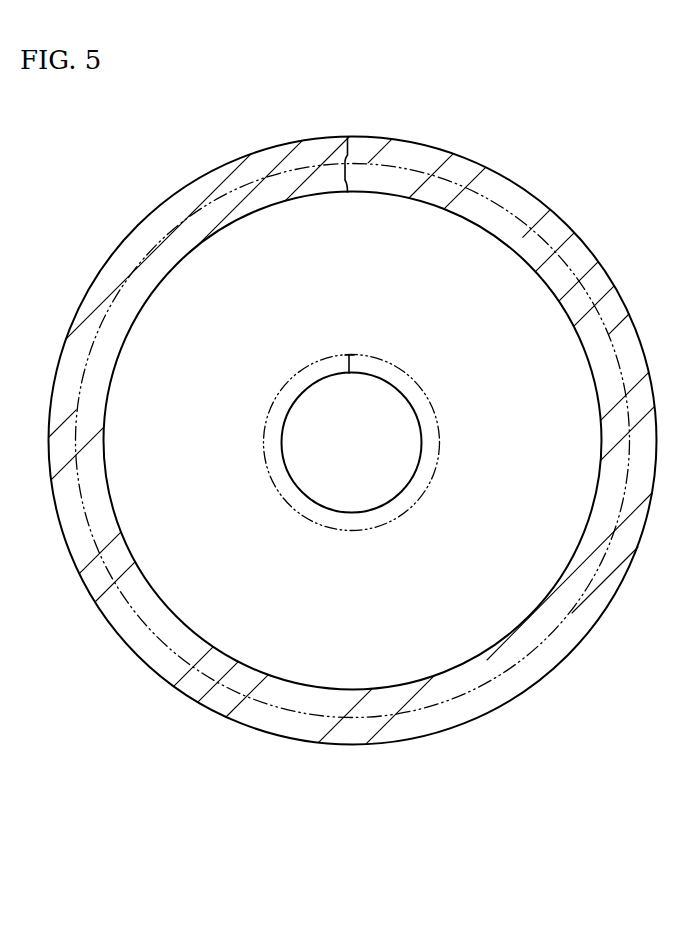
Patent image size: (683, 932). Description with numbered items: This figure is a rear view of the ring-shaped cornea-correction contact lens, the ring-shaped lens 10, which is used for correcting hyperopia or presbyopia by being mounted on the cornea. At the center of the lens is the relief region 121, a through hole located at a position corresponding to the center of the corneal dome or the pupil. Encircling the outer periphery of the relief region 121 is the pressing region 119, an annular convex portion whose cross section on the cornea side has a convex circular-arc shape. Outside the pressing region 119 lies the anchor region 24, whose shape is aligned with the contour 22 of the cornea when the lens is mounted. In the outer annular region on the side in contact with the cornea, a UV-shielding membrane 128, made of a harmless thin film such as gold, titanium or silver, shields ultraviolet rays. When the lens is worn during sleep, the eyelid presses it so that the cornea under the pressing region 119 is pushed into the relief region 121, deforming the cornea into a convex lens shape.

The ring-shaped lens 10 is at (504, 171).
The contour 22 is at (557, 211).
The anchor region 24 is at (510, 293).
The pressing region 119 is at (365, 356).
The relief region 121 is at (386, 458).
The UV-shielding membrane 128 is at (345, 160).